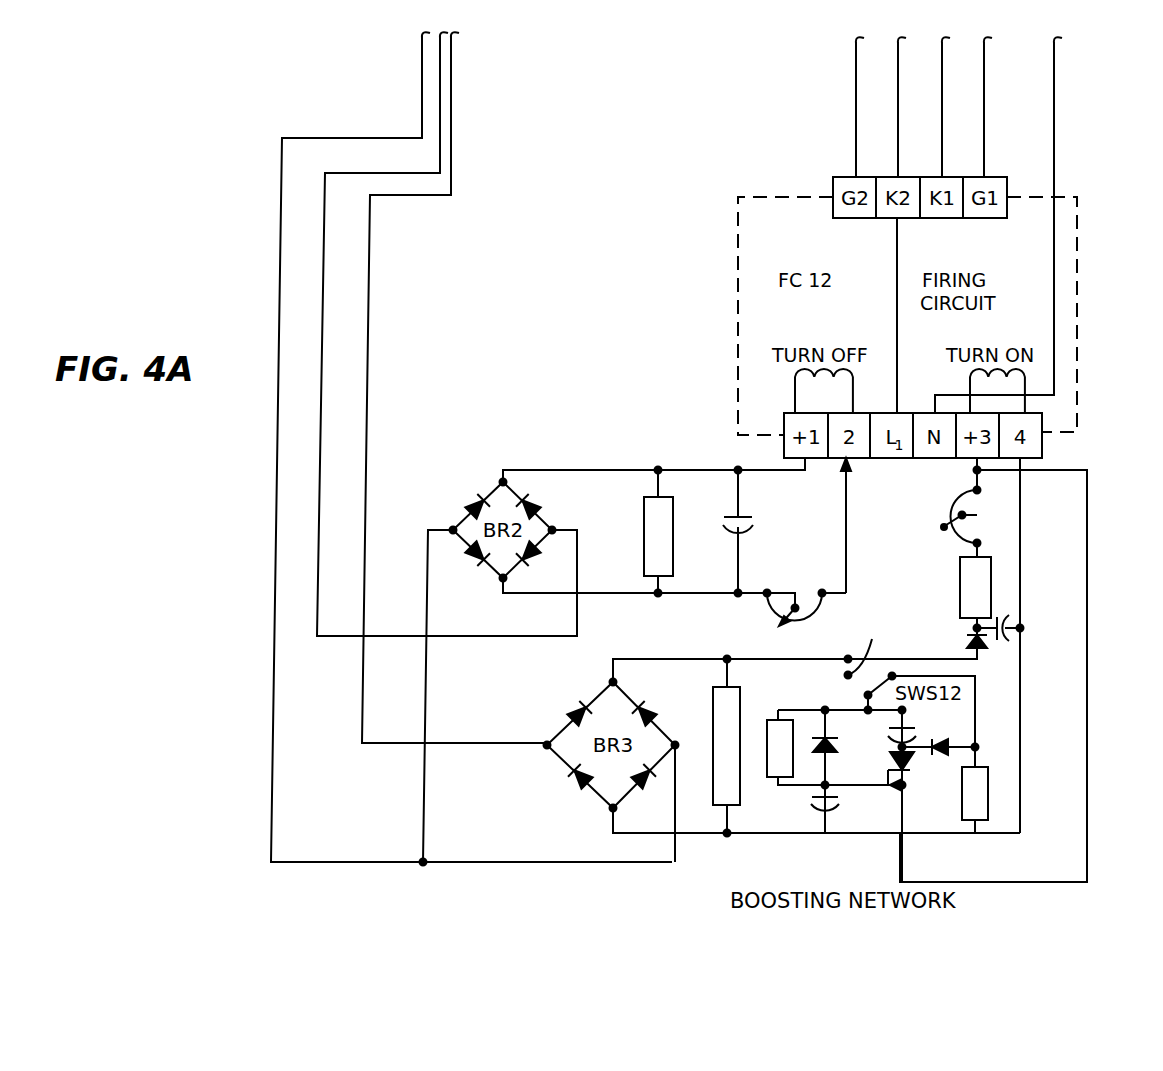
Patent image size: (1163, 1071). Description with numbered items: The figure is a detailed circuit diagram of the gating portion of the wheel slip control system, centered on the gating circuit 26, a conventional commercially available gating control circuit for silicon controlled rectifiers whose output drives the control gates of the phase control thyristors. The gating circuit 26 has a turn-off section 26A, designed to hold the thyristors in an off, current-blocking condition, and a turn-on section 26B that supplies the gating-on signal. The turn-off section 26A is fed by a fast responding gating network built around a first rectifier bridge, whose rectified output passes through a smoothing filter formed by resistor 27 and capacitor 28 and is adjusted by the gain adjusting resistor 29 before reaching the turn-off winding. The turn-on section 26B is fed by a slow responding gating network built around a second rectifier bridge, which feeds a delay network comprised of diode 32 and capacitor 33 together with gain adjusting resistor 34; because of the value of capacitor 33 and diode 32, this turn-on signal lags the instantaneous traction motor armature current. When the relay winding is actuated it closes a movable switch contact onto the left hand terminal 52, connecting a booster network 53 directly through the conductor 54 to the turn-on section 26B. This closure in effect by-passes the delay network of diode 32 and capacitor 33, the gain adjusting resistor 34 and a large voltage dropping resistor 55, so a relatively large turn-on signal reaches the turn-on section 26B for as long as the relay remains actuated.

The gating circuit 26 is at (1077, 309).
The turn-off section 26A is at (782, 264).
The turn-on section 26B is at (1012, 264).
The resistor 27 is at (673, 506).
The capacitor 28 is at (752, 520).
The gain adjusting resistor 29 is at (762, 624).
The diode 32 is at (967, 649).
The capacitor 33 is at (1007, 626).
The gain adjusting resistor 34 is at (950, 493).
The left hand terminal 52 is at (868, 650).
The booster network 53 is at (920, 795).
The conductor 54 is at (1087, 676).
The voltage dropping resistor 55 is at (960, 590).